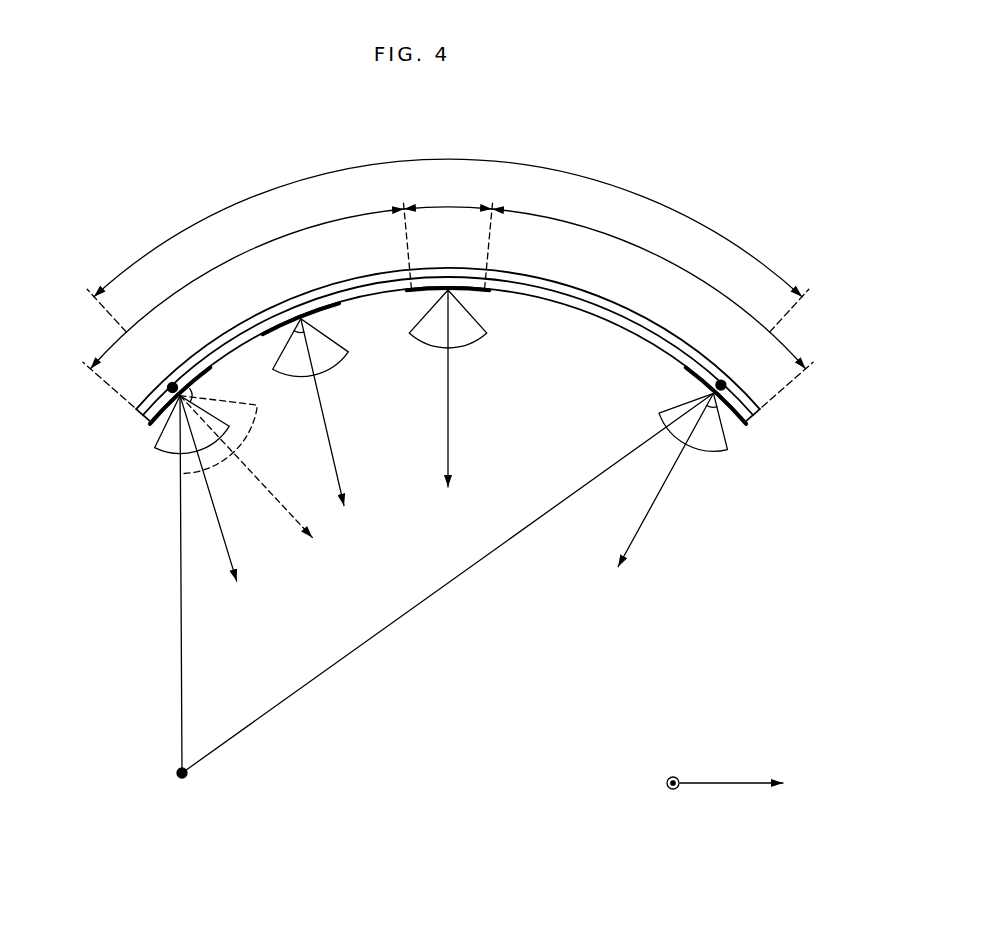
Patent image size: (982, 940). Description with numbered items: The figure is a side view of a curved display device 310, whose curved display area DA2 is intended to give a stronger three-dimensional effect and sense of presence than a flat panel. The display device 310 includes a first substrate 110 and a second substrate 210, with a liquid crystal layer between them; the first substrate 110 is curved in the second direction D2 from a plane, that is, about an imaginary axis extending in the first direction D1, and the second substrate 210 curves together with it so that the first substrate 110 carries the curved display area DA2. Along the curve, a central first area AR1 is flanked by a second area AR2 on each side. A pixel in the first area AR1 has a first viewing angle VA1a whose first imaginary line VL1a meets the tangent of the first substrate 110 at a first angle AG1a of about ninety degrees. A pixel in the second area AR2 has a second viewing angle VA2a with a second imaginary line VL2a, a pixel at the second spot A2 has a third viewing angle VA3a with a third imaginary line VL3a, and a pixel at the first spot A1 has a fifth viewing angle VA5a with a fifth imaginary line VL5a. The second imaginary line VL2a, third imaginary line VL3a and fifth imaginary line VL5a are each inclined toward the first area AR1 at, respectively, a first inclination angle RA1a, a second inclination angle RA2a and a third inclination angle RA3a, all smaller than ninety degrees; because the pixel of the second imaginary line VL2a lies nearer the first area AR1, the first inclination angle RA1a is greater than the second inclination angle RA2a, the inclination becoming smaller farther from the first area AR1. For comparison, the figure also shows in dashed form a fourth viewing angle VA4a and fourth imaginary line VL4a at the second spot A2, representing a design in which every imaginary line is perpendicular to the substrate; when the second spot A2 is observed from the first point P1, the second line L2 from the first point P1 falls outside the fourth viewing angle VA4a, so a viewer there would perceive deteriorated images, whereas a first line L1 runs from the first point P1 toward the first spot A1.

The display device 310 is at (474, 301).
The first substrate 110 is at (536, 277).
The second substrate 210 is at (581, 308).
The display area DA2 is at (448, 234).
The first area AR1 is at (448, 233).
The second area AR2 is at (448, 308).
The first angle AG1a is at (491, 292).
The first inclination angle RA1a is at (263, 333).
The second inclination angle RA2a is at (147, 427).
The third inclination angle RA3a is at (726, 428).
The first spot A1 is at (721, 380).
The second spot A2 is at (174, 381).
The first point P1 is at (182, 785).
The first line L1 is at (345, 655).
The second line L2 is at (181, 582).
The first viewing angle VA1a is at (477, 341).
The second viewing angle VA2a is at (331, 371).
The third viewing angle VA3a is at (162, 452).
The fourth viewing angle VA4a is at (242, 403).
The fifth viewing angle VA5a is at (715, 458).
The first imaginary line VL1a is at (450, 405).
The second imaginary line VL2a is at (331, 440).
The third imaginary line VL3a is at (222, 540).
The fourth imaginary line VL4a is at (282, 507).
The fifth imaginary line VL5a is at (655, 502).
The first direction D1 is at (658, 783).
The second direction D2 is at (748, 783).